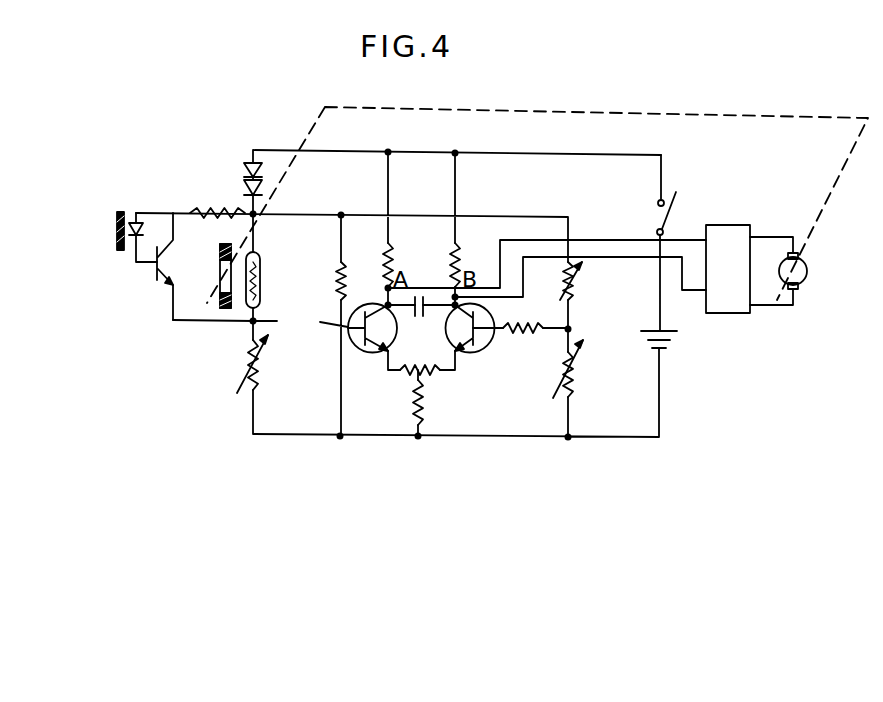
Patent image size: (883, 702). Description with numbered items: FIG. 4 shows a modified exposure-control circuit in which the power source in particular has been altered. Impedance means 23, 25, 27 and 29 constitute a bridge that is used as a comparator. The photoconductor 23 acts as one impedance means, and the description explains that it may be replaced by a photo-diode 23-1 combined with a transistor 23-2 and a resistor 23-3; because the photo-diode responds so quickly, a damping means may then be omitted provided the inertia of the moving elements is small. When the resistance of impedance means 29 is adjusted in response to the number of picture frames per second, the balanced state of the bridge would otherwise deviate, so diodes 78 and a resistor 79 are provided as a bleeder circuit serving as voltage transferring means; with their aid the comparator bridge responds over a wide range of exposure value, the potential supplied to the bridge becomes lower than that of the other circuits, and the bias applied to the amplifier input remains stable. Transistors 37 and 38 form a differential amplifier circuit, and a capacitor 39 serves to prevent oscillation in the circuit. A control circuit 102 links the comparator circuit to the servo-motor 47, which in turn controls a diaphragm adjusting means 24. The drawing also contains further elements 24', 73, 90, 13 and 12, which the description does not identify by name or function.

The light emitting element 24' is at (103, 213).
The photo-diode 23-1 is at (137, 222).
The transistor 23-2 is at (157, 262).
The resistor 23-3 is at (217, 212).
The diodes 78 is at (262, 173).
The diaphragm adjusting means 24 is at (207, 269).
The photoconductor 23 is at (260, 268).
The impedance means 25 is at (258, 368).
The resistor 79 is at (343, 264).
The transistor 37 is at (372, 305).
The transistor 38 is at (472, 352).
The capacitor 39 is at (424, 310).
The resistor 73 is at (438, 369).
The resistor 90 is at (421, 406).
The impedance means 27 is at (581, 283).
The impedance means 29 is at (571, 383).
The switch 13 is at (670, 200).
The battery 12 is at (668, 333).
The control circuit 102 is at (731, 230).
The servo-motor 47 is at (807, 270).